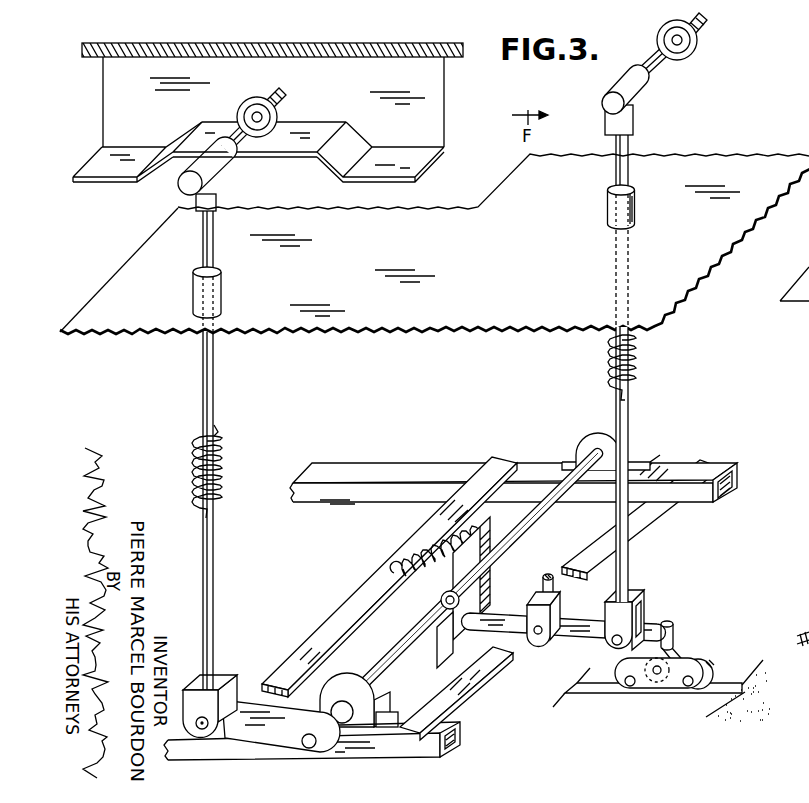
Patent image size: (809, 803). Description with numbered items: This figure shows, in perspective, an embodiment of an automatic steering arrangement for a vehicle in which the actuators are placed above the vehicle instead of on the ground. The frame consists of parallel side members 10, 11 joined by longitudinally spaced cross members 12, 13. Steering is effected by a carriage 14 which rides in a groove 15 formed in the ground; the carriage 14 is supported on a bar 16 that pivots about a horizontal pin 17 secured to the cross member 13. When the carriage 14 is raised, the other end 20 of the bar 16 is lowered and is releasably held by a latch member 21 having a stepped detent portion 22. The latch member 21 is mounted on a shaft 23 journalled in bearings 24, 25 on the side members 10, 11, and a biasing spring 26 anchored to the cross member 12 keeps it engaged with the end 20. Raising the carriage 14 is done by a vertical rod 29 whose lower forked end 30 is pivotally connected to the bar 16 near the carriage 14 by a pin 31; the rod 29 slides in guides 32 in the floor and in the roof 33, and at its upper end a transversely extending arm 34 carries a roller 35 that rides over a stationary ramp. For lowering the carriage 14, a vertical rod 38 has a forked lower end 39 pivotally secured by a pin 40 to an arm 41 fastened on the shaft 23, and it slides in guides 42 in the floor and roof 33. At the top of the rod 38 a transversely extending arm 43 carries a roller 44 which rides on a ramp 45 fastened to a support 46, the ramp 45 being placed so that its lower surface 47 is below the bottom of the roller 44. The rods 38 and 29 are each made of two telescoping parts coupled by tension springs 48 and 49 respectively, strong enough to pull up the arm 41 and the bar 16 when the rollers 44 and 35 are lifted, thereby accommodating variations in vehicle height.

The side member 10 is at (462, 735).
The side member 11 is at (403, 468).
The cross member 12 is at (364, 594).
The cross member 13 is at (467, 693).
The carriage 14 is at (660, 690).
The groove 15 is at (597, 693).
The bar 16 is at (585, 626).
The horizontal pin 17 is at (540, 650).
The end of bar 20 is at (488, 613).
The latch member 21 is at (492, 592).
The stepped detent portion 22 is at (437, 655).
The shaft 23 is at (531, 525).
The bearing 24 is at (351, 676).
The bearing 25 is at (598, 434).
The biasing spring 26 is at (440, 570).
The vertical rod 29 is at (630, 563).
The forked end 30 is at (645, 603).
The pin 31 is at (612, 645).
The guide 32 is at (637, 217).
The roof 33 is at (428, 322).
The transversely extending arm 34 is at (660, 68).
The roller 35 is at (696, 48).
The vertical rod 38 is at (215, 563).
The forked lower end 39 is at (224, 684).
The pin 40 is at (202, 731).
The arm 41 is at (277, 742).
The guide 42 is at (222, 292).
The transversely extending arm 43 is at (241, 142).
The roller 44 is at (257, 97).
The ramp 45 is at (355, 142).
The support 46 is at (265, 43).
The lower surface 47 is at (137, 150).
The tension spring 48 is at (226, 459).
The tension spring 49 is at (640, 361).